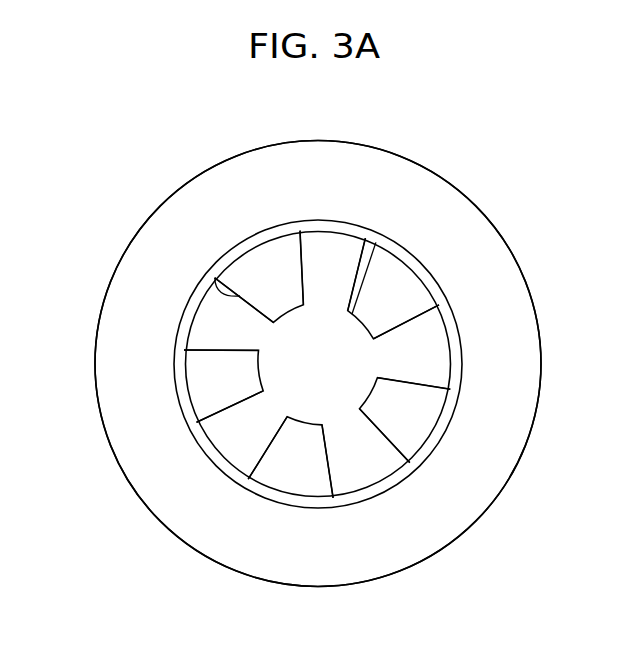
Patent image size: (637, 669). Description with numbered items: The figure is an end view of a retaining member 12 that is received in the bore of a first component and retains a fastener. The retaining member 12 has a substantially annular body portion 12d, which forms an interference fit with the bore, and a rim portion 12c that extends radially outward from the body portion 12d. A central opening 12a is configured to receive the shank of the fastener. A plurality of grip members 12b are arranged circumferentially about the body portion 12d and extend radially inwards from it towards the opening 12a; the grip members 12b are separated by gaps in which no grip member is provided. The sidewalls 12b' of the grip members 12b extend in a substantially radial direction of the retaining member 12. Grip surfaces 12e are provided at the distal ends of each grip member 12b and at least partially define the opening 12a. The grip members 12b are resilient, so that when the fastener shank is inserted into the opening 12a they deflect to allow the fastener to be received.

The retaining member 12 is at (517, 163).
The opening 12a is at (340, 374).
The grip members 12b is at (302, 385).
The sidewalls 12b' is at (335, 360).
The rim portion 12c is at (510, 411).
The body portion 12d is at (455, 345).
The grip surfaces 12e is at (293, 305).